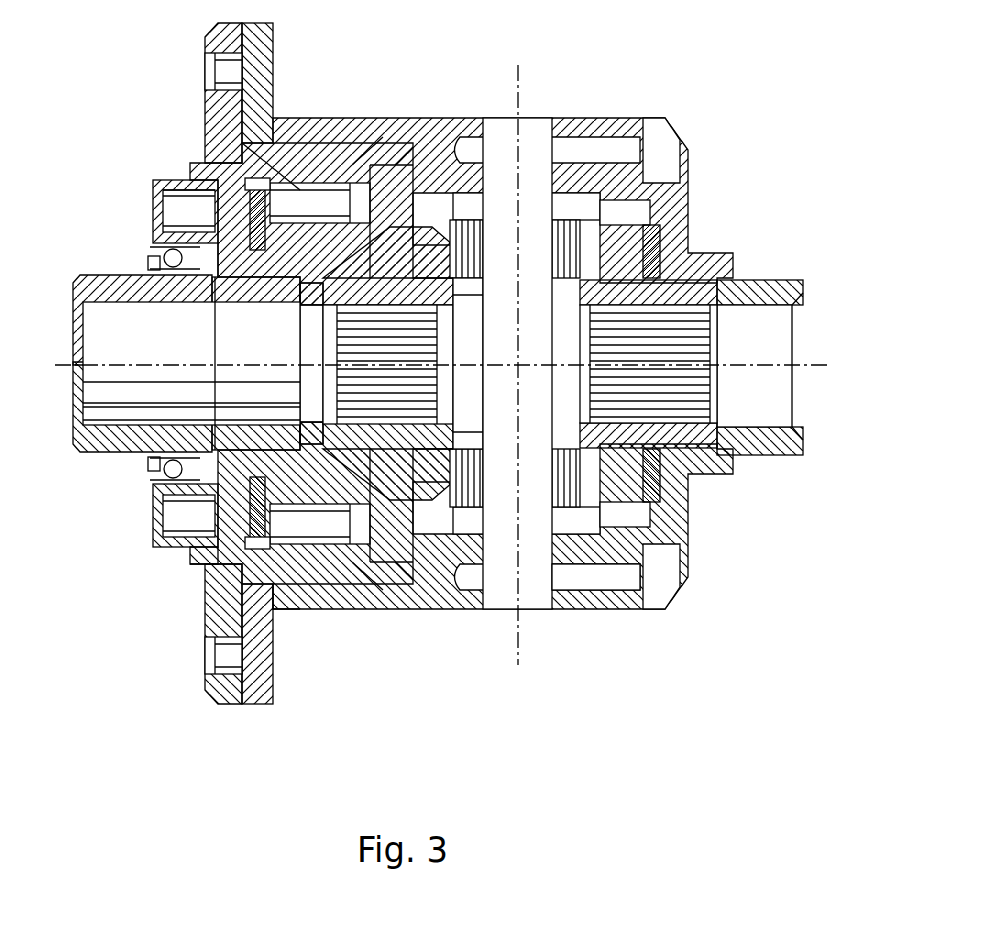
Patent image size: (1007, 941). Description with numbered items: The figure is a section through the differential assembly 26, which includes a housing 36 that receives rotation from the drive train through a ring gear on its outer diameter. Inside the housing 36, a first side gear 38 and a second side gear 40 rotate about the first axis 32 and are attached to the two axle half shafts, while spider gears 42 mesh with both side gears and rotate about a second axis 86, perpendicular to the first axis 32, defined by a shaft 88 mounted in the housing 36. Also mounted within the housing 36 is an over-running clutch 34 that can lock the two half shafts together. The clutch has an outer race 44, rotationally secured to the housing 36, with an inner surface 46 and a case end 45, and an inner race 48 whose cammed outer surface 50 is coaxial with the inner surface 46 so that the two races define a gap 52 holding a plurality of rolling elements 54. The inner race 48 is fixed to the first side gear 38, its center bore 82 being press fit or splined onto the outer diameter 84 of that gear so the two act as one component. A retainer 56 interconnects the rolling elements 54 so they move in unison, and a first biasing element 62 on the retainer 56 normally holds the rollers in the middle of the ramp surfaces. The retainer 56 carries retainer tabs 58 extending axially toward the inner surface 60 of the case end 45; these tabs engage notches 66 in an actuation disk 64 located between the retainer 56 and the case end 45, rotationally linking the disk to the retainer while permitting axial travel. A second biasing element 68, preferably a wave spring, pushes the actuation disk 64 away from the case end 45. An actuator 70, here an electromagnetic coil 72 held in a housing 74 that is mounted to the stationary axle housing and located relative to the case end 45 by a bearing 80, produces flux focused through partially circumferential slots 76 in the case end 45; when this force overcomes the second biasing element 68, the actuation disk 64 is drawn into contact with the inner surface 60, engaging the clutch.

The differential assembly 26 is at (503, 748).
The first axis 32 is at (60, 360).
The over-running clutch 34 is at (205, 103).
The housing 36 is at (622, 117).
The first side gear 38 is at (445, 480).
The second side gear 40 is at (668, 475).
The spider gears 42 is at (613, 225).
The outer race 44 is at (345, 178).
The case end 45 is at (225, 135).
The inner surface 46 is at (303, 175).
The inner race 48 is at (375, 258).
The cammed outer surface 50 is at (383, 195).
The gap 52 is at (258, 178).
The rolling elements 54 is at (351, 212).
The retainer 56 is at (288, 610).
The retainer tabs 58 is at (255, 620).
The inner surface 60 is at (225, 575).
The first biasing element 62 is at (263, 205).
The actuation disk 64 is at (195, 488).
The notches 66 is at (155, 543).
The second biasing element 68 is at (222, 250).
The actuator 70 is at (153, 176).
The electromagnetic coil 72 is at (200, 213).
The housing 74 is at (180, 205).
The slots 76 is at (150, 258).
The bearing 80 is at (195, 475).
The center bore 82 is at (320, 280).
The outer diameter 84 is at (317, 447).
The second axis 86 is at (520, 657).
The shaft 88 is at (590, 568).